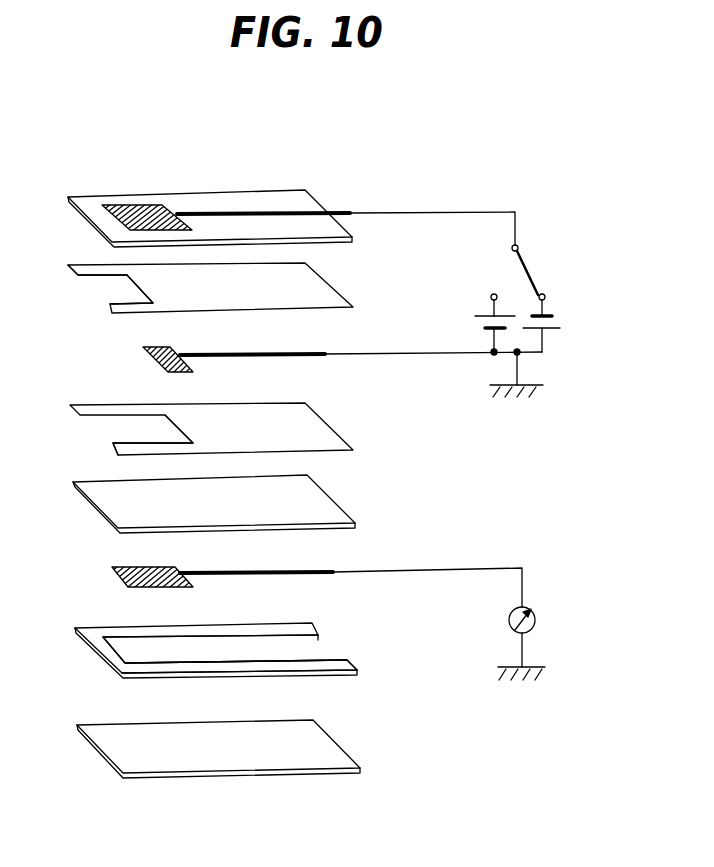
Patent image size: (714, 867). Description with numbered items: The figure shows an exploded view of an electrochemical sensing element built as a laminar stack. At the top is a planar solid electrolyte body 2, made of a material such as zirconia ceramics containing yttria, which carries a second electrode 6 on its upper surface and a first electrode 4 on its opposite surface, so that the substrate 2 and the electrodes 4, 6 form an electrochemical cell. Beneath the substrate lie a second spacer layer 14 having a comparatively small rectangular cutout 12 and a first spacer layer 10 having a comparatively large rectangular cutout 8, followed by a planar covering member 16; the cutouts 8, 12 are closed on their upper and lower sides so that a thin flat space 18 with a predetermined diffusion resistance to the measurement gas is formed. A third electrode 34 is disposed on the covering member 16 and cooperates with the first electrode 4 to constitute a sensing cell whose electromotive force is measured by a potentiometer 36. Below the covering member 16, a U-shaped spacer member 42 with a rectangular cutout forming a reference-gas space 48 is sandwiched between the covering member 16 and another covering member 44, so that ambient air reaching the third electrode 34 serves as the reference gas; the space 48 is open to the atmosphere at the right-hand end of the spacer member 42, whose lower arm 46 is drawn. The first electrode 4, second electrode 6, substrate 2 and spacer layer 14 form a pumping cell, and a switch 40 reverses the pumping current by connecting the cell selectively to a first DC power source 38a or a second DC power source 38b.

The planar solid electrolyte body 2 is at (272, 200).
The second electrode 6 is at (142, 212).
The second spacer layer 14 is at (322, 285).
The rectangular cutout 12 is at (85, 280).
The thin flat space 18 is at (108, 291).
The first electrode 4 is at (147, 358).
The first spacer layer 10 is at (325, 428).
The rectangular cutout 8 is at (113, 442).
The covering member 16 is at (335, 515).
The third electrode 34 is at (122, 576).
The U-shaped spacer member 42 is at (102, 650).
The reference-gas space 48 is at (273, 647).
The lower arm of frame 46 is at (333, 658).
The covering member 44 is at (108, 750).
The switch 40 is at (542, 262).
The first DC power source 38a is at (477, 323).
The second DC power source 38b is at (560, 318).
The potentiometer 36 is at (535, 618).